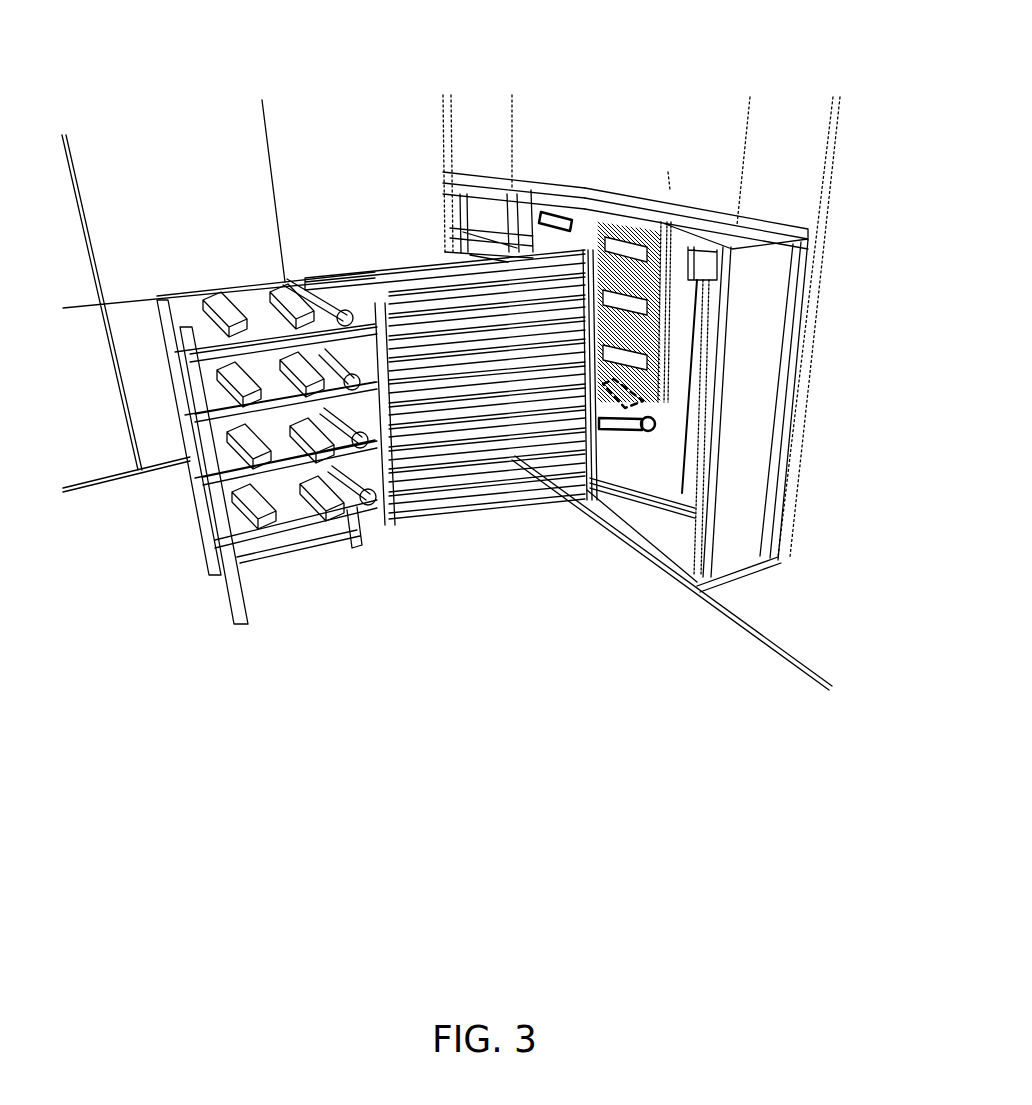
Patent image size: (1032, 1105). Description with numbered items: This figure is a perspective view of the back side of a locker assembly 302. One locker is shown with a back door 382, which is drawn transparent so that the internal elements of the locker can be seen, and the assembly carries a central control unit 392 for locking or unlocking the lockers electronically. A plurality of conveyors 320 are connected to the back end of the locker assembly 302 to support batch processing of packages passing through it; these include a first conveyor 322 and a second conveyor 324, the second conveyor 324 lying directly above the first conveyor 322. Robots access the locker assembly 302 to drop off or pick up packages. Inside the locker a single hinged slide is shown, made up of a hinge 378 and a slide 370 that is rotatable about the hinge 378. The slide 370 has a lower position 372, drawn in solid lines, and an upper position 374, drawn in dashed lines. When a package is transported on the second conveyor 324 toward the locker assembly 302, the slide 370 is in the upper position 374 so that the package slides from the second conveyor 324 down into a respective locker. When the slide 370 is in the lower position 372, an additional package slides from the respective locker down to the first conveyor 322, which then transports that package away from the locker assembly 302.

The locker assembly 302 is at (623, 178).
The plurality of conveyors 320 is at (377, 320).
The first conveyor 322 is at (517, 433).
The second conveyor 324 is at (462, 400).
The slide 370 is at (730, 454).
The lower position 372 is at (620, 428).
The upper position 374 is at (628, 403).
The hinge 378 is at (648, 432).
The back door 382 is at (482, 207).
The central control unit 392 is at (558, 212).